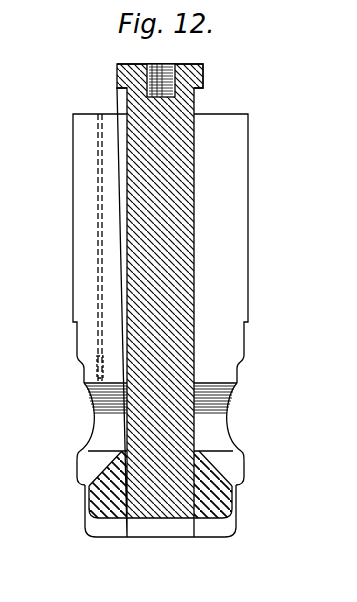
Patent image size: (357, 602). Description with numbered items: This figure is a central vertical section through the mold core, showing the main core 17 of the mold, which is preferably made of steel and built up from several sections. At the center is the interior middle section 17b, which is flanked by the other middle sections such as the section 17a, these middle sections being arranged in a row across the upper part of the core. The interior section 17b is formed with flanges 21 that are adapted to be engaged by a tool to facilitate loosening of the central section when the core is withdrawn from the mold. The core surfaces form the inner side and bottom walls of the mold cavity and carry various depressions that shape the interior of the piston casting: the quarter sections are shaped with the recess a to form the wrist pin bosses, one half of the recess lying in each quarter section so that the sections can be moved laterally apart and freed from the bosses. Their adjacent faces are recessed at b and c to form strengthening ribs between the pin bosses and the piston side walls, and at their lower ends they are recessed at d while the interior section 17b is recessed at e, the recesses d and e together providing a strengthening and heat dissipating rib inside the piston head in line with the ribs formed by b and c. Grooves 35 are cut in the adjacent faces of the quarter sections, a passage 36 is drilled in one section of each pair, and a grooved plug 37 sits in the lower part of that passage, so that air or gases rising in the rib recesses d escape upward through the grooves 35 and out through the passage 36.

The main core 17 is at (157, 300).
The middle core section 17a is at (160, 248).
The interior middle core section 17b is at (128, 108).
The flanges 21 is at (117, 86).
The grooves 35 is at (156, 525).
The passage 36 is at (95, 276).
The grooved plug 37 is at (95, 368).
The recess a is at (102, 434).
The recess b is at (76, 468).
The recess c is at (89, 480).
The recess d is at (107, 533).
The recess e is at (175, 533).